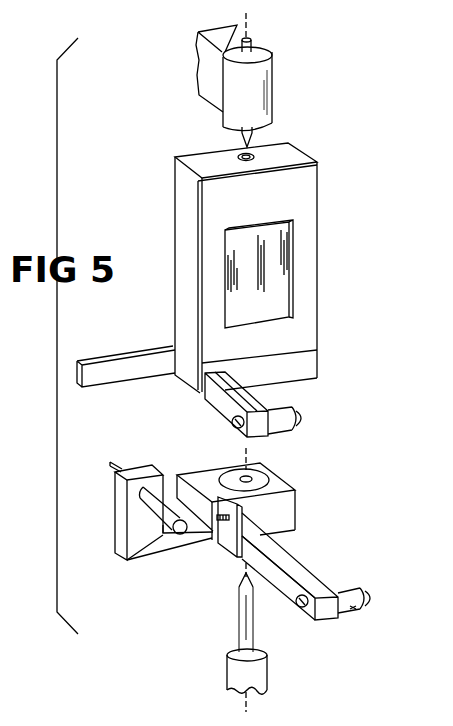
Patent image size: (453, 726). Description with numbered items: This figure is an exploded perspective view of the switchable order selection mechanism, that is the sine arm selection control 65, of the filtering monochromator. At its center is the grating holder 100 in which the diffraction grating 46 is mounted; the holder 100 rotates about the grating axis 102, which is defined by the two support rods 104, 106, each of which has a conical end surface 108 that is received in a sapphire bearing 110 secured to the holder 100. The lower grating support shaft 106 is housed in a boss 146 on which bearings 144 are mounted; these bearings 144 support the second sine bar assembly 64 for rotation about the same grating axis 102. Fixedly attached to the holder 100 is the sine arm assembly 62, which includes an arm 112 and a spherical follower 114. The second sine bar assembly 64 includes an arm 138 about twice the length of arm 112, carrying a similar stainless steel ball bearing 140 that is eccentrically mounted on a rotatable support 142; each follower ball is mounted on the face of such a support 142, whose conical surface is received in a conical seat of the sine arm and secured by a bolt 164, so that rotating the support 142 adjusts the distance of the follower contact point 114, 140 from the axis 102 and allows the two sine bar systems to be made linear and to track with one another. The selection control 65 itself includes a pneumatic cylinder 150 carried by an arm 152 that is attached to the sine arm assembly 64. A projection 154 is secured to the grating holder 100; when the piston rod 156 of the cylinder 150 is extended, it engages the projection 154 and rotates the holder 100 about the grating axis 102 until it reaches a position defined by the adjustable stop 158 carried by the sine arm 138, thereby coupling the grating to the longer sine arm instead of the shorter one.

The grating holder 100 is at (290, 158).
The grating axis 102 is at (250, 30).
The support rod 104 is at (270, 56).
The conical end surface 108 is at (242, 142).
The sapphire bearing 110 is at (238, 157).
The diffraction grating 46 is at (275, 281).
The projection 154 is at (122, 364).
The sine arm assembly 62 is at (203, 408).
The arm 112 is at (225, 406).
The bolt 164 is at (236, 427).
The rotatable support 142 is at (280, 408).
The spherical follower 114 is at (301, 414).
The stainless steel ball bearing 140 is at (368, 598).
The piston rod 156 is at (116, 460).
The pneumatic cylinder 150 is at (150, 498).
The arm 152 is at (127, 558).
The sine arm selection control 65 is at (153, 533).
The bearings 144 is at (263, 477).
The adjustable stop 158 is at (227, 522).
The sine bar assembly 64 is at (298, 550).
The arm 138 is at (305, 570).
The support rod 106 is at (243, 622).
The boss 146 is at (263, 675).